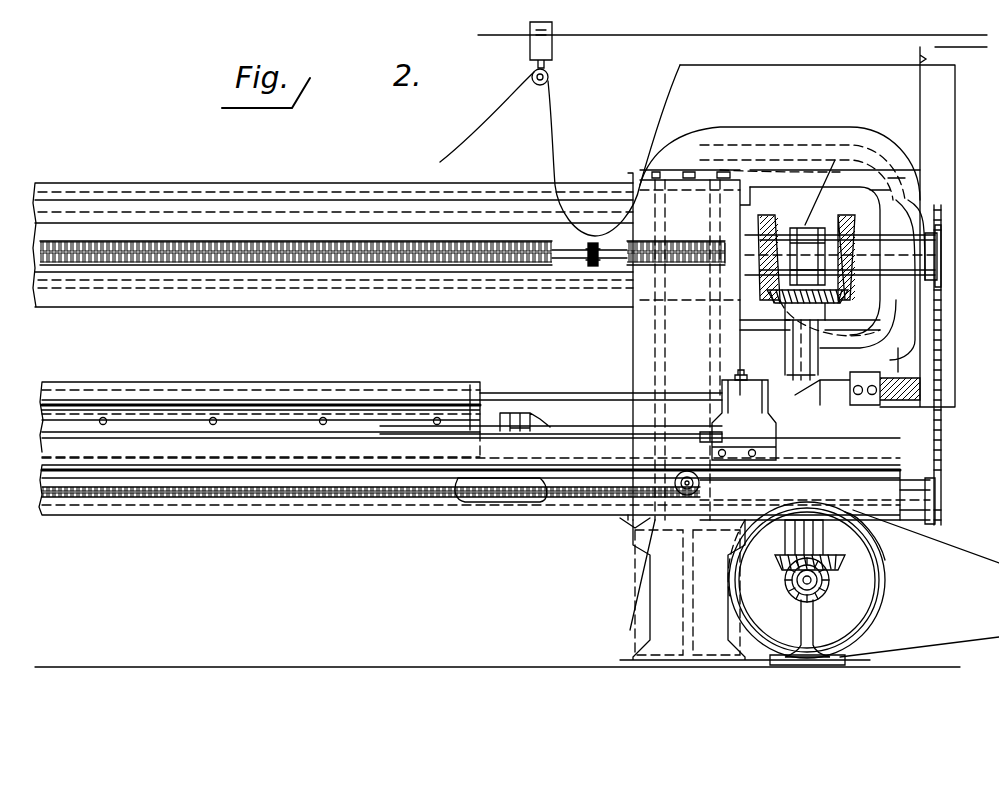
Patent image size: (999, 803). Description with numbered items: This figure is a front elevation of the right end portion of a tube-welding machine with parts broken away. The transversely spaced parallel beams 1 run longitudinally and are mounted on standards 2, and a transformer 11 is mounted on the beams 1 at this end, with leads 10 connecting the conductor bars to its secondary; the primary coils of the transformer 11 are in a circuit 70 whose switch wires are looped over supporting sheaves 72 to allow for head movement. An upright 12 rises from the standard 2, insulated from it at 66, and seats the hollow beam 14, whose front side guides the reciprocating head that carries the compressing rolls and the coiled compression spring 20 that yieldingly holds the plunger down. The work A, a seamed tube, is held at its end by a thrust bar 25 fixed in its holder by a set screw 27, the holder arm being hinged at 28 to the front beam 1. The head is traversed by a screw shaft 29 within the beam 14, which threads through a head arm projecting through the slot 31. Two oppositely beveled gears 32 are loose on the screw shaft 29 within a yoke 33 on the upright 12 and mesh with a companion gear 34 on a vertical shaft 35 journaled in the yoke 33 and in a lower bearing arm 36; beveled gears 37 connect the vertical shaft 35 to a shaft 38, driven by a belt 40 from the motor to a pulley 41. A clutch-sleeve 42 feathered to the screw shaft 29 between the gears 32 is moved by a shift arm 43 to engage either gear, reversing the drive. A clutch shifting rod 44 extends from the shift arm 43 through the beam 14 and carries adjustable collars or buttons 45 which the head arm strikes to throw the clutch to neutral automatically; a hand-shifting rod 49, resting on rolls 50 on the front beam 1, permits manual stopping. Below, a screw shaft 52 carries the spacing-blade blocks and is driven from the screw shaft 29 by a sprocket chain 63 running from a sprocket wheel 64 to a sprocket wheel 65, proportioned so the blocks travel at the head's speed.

The beams 1 is at (372, 488).
The standards 2 is at (650, 553).
The leads 10 is at (592, 432).
The transformer 11 is at (855, 405).
The upright 12 is at (689, 345).
The hollow beam 14 is at (500, 187).
The coiled compression spring 20 is at (752, 418).
The thrust bar 25 is at (530, 395).
The set screw 27 is at (730, 378).
The hinge 28 is at (712, 434).
The screw shaft 29 is at (425, 270).
The slot 31 is at (45, 238).
The beveled gears 32 is at (848, 215).
The yoke 33 is at (810, 150).
The companion gear 34 is at (772, 300).
The vertical shaft 35 is at (802, 383).
The lower bearing arm 36 is at (790, 530).
The beveled gears 37 is at (786, 583).
The shaft 38 is at (803, 586).
The belt 40 is at (976, 558).
The pulley 41 is at (887, 567).
The clutch-sleeve 42 is at (800, 228).
The shift arm 43 is at (822, 195).
The clutch shifting rod 44 is at (590, 252).
The collar or button 45 is at (628, 254).
The hand-shifting rod 49 is at (535, 470).
The roll 50 is at (686, 471).
The screw shaft 52 is at (498, 488).
The sprocket chain 63 is at (942, 333).
The sprocket wheel 64 is at (945, 257).
The sprocket wheel 65 is at (942, 495).
The insulation 66 is at (640, 520).
The circuit 70 is at (922, 45).
The supporting sheaves 72 is at (550, 80).
The work A is at (283, 392).